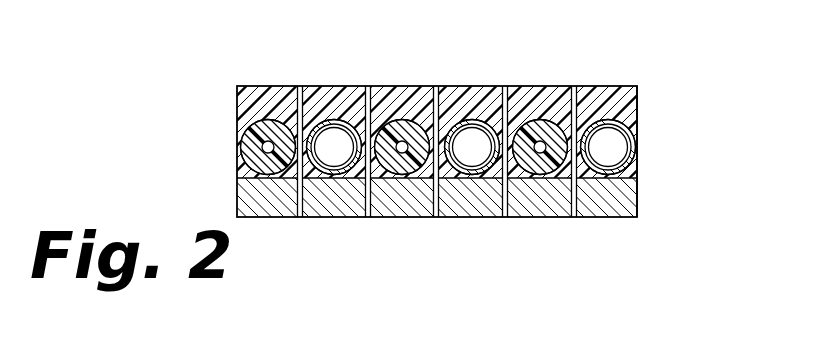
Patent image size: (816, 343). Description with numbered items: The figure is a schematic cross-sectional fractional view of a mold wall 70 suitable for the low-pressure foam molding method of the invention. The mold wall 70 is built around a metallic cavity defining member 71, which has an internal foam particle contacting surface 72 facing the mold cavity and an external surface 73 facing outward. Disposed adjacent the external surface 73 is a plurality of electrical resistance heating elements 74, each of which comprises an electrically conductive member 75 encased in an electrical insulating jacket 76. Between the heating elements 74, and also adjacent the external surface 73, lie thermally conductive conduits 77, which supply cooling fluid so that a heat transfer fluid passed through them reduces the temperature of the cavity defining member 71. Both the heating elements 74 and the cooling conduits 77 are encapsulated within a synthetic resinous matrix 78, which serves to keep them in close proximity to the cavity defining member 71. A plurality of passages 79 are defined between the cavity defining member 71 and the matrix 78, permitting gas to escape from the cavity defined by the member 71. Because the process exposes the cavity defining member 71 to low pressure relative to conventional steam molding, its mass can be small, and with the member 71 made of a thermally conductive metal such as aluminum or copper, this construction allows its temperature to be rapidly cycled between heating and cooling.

The mold wall 70 is at (587, 55).
The metallic cavity defining member 71 is at (630, 218).
The internal foam particle contacting surface 72 is at (540, 218).
The external surface 73 is at (638, 165).
The electrical resistance heating elements 74 is at (402, 141).
The electrically conductive member 75 is at (397, 122).
The electrical insulating jacket 76 is at (417, 123).
The thermally conductive conduits 77 is at (638, 127).
The synthetic resinous matrix 78 is at (325, 97).
The passages 79 is at (370, 218).